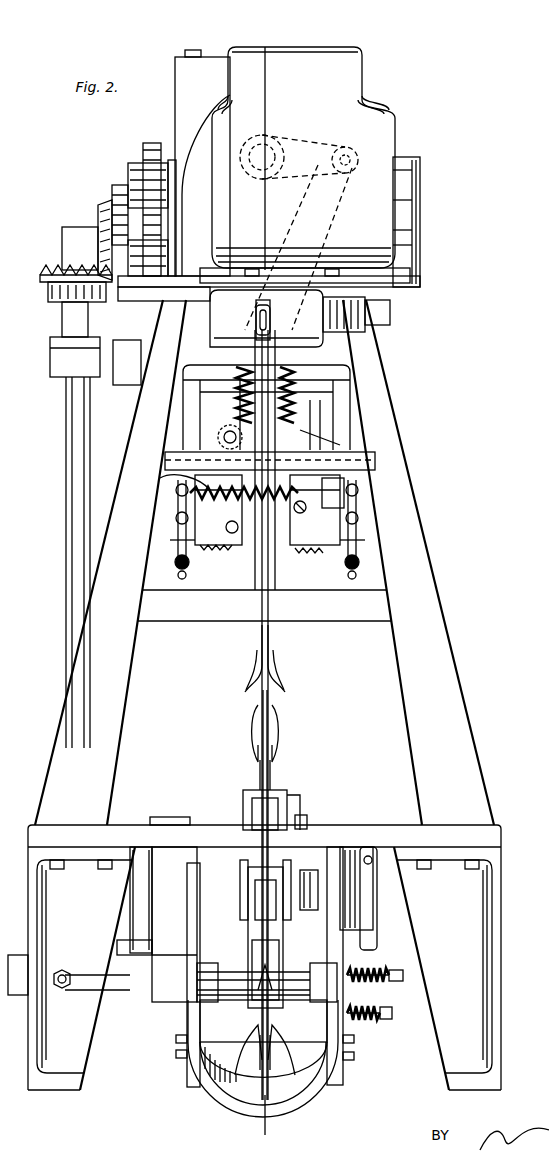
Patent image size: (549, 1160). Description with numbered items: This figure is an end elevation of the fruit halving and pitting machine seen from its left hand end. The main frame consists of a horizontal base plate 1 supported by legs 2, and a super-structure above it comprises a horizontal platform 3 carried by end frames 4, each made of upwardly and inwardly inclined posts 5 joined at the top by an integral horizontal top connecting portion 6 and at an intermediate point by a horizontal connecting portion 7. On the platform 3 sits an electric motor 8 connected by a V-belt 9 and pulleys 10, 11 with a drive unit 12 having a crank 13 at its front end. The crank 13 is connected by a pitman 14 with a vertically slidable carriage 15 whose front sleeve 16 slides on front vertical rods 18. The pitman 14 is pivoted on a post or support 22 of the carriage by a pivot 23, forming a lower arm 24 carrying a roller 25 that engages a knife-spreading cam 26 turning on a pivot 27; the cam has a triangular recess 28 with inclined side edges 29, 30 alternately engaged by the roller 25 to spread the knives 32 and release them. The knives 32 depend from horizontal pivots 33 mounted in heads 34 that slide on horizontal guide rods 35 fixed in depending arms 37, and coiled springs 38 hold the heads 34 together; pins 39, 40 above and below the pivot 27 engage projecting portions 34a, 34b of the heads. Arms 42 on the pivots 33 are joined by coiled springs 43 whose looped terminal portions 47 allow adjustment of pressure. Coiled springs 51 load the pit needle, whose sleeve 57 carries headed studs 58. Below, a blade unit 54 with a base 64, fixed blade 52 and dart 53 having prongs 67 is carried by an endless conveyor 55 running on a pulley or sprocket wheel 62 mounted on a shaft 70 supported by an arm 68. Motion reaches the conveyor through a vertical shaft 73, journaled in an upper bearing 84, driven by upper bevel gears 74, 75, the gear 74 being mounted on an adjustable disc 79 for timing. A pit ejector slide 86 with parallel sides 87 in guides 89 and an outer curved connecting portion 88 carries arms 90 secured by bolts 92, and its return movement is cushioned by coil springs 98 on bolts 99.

The horizontal base plate 1 is at (390, 828).
The legs 2 is at (28, 1060).
The horizontal platform 3 is at (370, 315).
The end frames 4 is at (290, 42).
The posts 5 is at (122, 722).
The horizontal top connecting portion 6 is at (120, 386).
The horizontal connecting portion 7 is at (218, 621).
The electric motor 8 is at (393, 140).
The V-belt 9 is at (154, 142).
The pulley 10 is at (140, 160).
The pulley 11 is at (160, 301).
The drive unit 12 is at (176, 101).
The crank 13 is at (308, 145).
The pitman 14 is at (304, 199).
The vertically slidable carriage 15 is at (320, 470).
The front sleeve 16 is at (330, 465).
The front vertical rods 18 is at (250, 582).
The post or support 22 is at (318, 448).
The pivot 23 is at (280, 345).
The lower arm 24 is at (232, 395).
The roller 25 is at (222, 430).
The knife-spreading cam 26 is at (286, 478).
The pivot 27 is at (380, 460).
The triangular recess 28 is at (210, 552).
The inclined side edge 29 is at (165, 460).
The inclined side edge 30 is at (300, 395).
The knives 32 is at (276, 658).
The horizontal pivots 33 is at (176, 518).
The heads 34 is at (276, 560).
The upper horizontally projecting portion 34a is at (320, 430).
The lower horizontally projecting portion 34b is at (235, 516).
The horizontal guide rods 35 is at (345, 490).
The depending arms 37 is at (176, 497).
The coiled springs 38 is at (188, 488).
The upper pin 39 is at (190, 493).
The lower pin 40 is at (292, 513).
The arms 42 is at (170, 540).
The coiled springs 43 is at (176, 562).
The looped terminal portions 47 is at (180, 578).
The coiled springs 51 is at (240, 385).
The fixed blade 52 is at (270, 773).
The dart 53 is at (275, 738).
The blade unit 54 is at (292, 800).
The endless conveyor 55 is at (300, 818).
The sleeve 57 is at (245, 380).
The headed studs 58 is at (215, 368).
The pulley or sprocket wheel 62 is at (243, 805).
The base 64 is at (283, 1012).
The prongs 67 is at (254, 720).
The arm 68 is at (205, 930).
The shaft 70 is at (308, 912).
The vertical shaft 73 is at (66, 615).
The upper bevel gear 74 is at (98, 211).
The upper bevel gear 75 is at (50, 272).
The adjustable disc 79 is at (130, 301).
The upper bearing 84 is at (55, 377).
The pit ejector slide 86 is at (340, 1088).
The sides 87 is at (200, 1040).
The outer curved connecting portion 88 is at (300, 1110).
The guides 89 is at (355, 949).
The arms 90 is at (190, 1078).
The bolts 92 is at (176, 1046).
The coil springs 98 is at (392, 969).
The bolts 99 is at (383, 994).